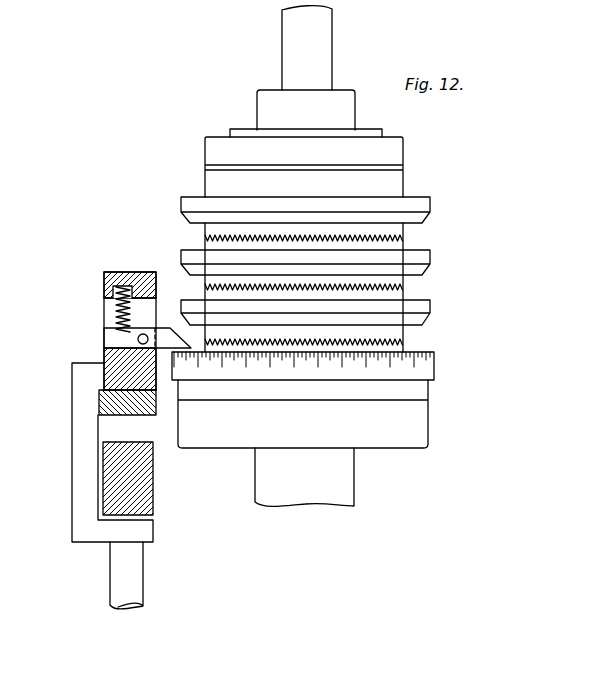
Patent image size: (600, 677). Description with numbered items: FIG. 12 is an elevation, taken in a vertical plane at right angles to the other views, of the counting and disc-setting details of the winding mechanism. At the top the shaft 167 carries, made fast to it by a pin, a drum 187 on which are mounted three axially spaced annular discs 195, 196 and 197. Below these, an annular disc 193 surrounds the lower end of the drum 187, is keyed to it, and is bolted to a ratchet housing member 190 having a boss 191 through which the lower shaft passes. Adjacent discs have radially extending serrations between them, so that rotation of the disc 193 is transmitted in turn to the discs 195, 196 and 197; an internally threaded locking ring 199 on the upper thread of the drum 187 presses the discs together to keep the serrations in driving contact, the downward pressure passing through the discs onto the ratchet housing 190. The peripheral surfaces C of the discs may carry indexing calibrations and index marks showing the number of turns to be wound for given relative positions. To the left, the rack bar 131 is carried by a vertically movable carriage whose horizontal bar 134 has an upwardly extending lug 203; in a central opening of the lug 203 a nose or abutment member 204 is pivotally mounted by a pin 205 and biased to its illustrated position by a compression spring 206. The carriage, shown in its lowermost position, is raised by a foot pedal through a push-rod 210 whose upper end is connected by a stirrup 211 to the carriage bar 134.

The shaft 167 is at (331, 27).
The drum 187 is at (262, 104).
The locking ring 199 is at (405, 152).
The annular disc 197 is at (430, 208).
The annular disc 196 is at (182, 249).
The annular disc 195 is at (430, 308).
The peripheral surfaces C is at (404, 351).
The annular disc 193 is at (435, 371).
The ratchet housing member 190 is at (428, 396).
The boss 191 is at (354, 491).
The lug 203 is at (125, 272).
The compression spring 206 is at (117, 305).
The nose or abutment member 204 is at (108, 336).
The pin 205 is at (138, 341).
The horizontal bar 134 is at (99, 416).
The stirrup 211 is at (72, 488).
The rack bar 131 is at (148, 485).
The push-rod 210 is at (138, 573).